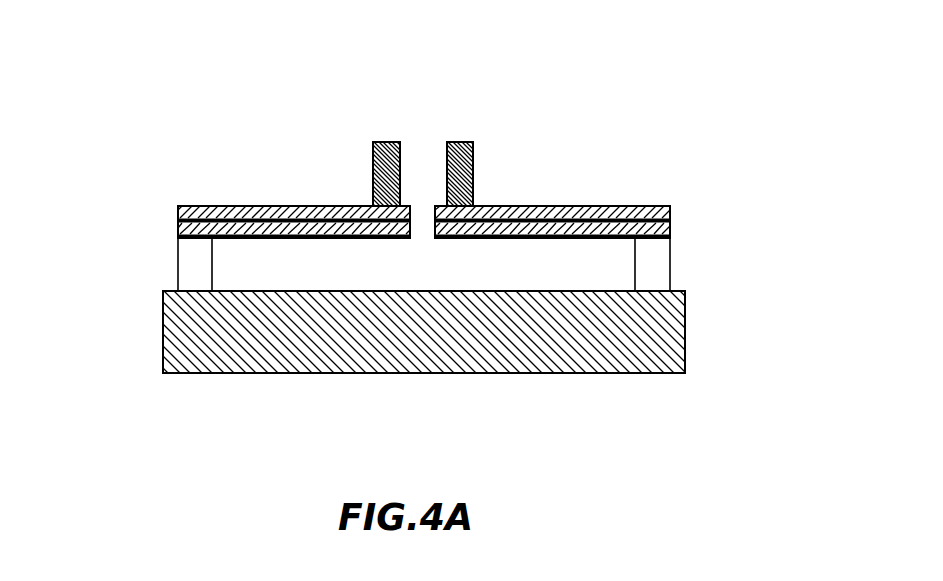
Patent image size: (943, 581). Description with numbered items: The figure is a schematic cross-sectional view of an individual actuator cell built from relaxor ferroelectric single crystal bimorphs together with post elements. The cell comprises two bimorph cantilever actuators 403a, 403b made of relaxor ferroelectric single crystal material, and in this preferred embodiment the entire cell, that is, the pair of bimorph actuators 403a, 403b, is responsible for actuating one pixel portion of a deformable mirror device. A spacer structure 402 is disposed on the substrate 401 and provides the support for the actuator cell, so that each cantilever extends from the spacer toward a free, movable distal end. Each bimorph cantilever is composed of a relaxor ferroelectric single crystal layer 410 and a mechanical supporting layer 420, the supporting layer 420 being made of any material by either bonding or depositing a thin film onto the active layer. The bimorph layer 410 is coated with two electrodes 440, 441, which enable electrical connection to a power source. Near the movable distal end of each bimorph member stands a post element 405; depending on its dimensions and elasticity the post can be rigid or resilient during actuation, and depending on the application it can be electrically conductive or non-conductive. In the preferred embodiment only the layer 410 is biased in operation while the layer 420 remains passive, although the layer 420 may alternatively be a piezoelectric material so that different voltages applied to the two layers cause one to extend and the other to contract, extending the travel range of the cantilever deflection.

The substrate 401 is at (197, 327).
The spacer structure 402 is at (195, 255).
The bimorph actuator 403a is at (280, 206).
The bimorph actuator 403b is at (582, 206).
The post element 405 is at (386, 143).
The relaxor ferroelectric single crystal layer 410 is at (507, 206).
The mechanical supporting layer 420 is at (563, 206).
The electrode 440 is at (670, 214).
The electrode 441 is at (670, 238).